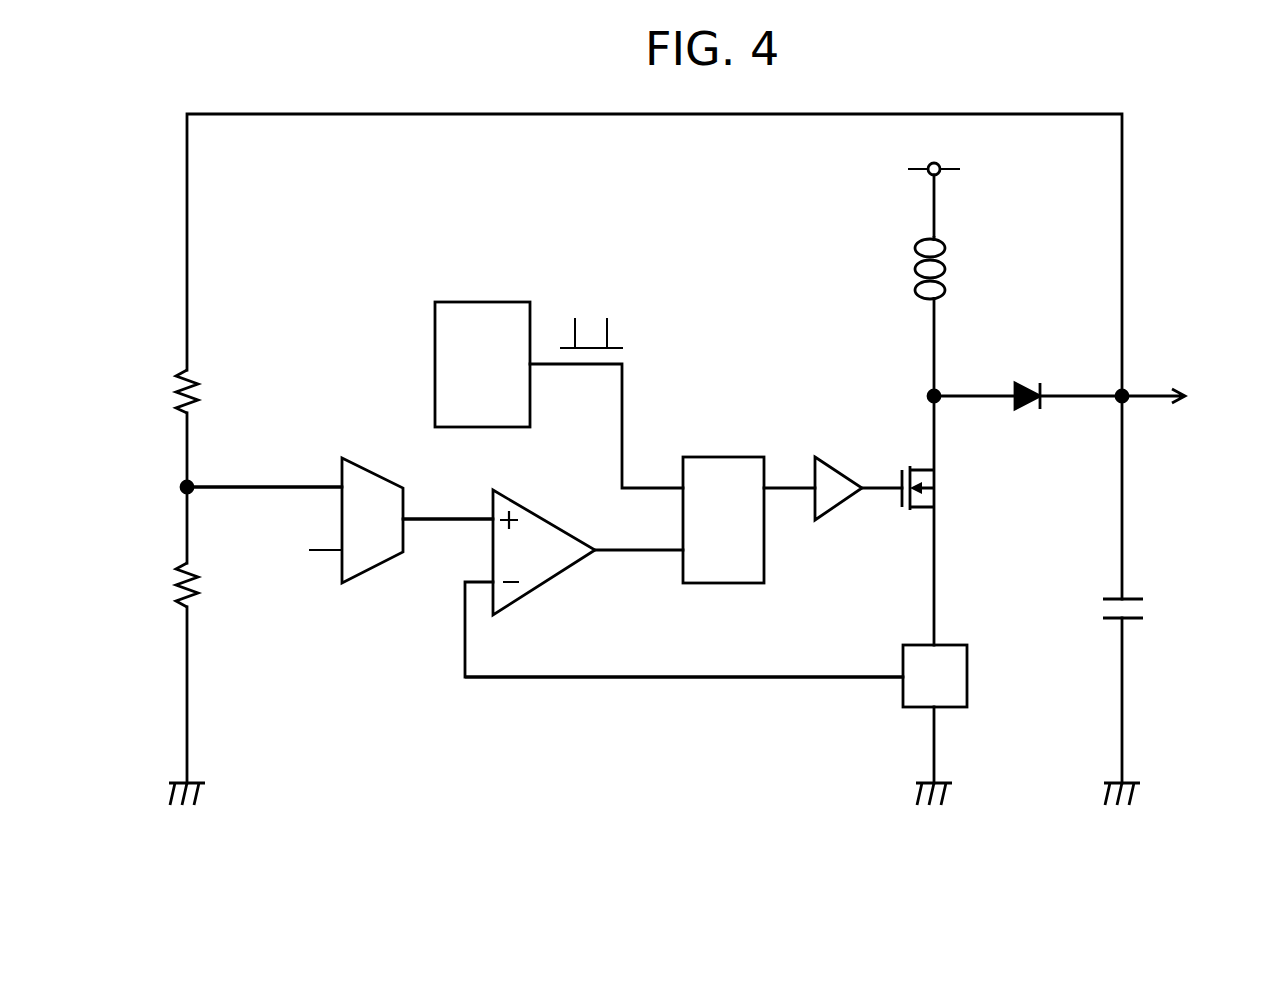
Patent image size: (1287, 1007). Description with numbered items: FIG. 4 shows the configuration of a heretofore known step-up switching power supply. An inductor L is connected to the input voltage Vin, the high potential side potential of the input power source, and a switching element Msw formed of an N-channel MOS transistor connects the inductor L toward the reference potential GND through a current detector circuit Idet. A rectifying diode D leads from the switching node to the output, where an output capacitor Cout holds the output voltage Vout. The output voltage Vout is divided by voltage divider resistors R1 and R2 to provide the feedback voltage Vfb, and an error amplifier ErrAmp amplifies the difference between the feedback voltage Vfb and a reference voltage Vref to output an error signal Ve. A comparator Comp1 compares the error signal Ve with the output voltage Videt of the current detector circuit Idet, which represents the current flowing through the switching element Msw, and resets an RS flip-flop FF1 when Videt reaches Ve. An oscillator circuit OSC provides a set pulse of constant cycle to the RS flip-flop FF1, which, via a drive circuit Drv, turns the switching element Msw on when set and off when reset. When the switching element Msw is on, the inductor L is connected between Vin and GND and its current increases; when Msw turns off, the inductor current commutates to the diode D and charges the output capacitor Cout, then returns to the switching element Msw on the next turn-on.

The voltage divider resistor R1 is at (205, 391).
The voltage divider resistor R2 is at (205, 585).
The feedback voltage Vfb is at (264, 473).
The reference voltage Vref is at (300, 550).
The error amplifier ErrAmp is at (372, 507).
The error signal Ve is at (448, 506).
The comparator Comp1 is at (549, 549).
The oscillator circuit OSC is at (529, 351).
The RS flip-flop FF1 is at (723, 506).
The drive circuit Drv is at (837, 474).
The switching element Msw is at (949, 488).
The inductor L is at (946, 268).
The input voltage Vin is at (955, 171).
The diode D is at (1027, 384).
The output voltage Vout is at (1179, 397).
The output capacitor Cout is at (1151, 610).
The current detector circuit Idet is at (959, 676).
The output voltage of the current detector circuit Videt is at (684, 662).
The reference potential GND is at (684, 793).